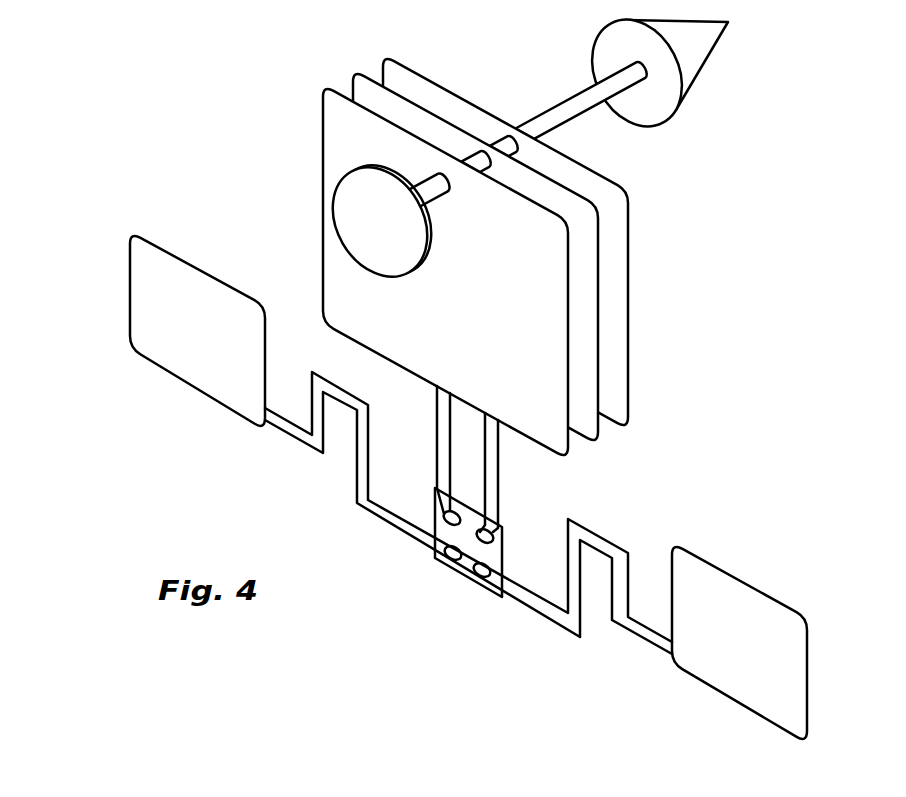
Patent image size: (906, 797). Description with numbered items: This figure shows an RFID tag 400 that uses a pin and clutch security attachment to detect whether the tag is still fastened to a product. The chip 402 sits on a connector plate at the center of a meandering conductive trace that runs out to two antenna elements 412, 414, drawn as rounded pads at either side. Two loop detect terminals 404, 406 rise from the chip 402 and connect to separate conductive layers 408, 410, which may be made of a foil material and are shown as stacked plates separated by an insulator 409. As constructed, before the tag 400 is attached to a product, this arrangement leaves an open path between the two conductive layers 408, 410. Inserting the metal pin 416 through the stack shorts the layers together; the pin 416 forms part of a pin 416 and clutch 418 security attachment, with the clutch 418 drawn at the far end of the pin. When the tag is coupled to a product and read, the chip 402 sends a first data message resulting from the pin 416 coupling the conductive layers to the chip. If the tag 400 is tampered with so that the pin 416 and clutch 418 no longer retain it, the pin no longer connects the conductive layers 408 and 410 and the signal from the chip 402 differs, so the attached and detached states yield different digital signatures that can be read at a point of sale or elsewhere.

The RFID tag 400 is at (146, 52).
The chip 402 is at (467, 570).
The loop detect terminal 404 is at (445, 453).
The loop detect terminal 406 is at (497, 500).
The conductive layer 408 is at (537, 423).
The insulator 409 is at (590, 430).
The conductive layer 410 is at (616, 389).
The antenna element 412 is at (190, 283).
The antenna element 414 is at (758, 597).
The metal pin 416 is at (350, 207).
The clutch 418 is at (698, 50).